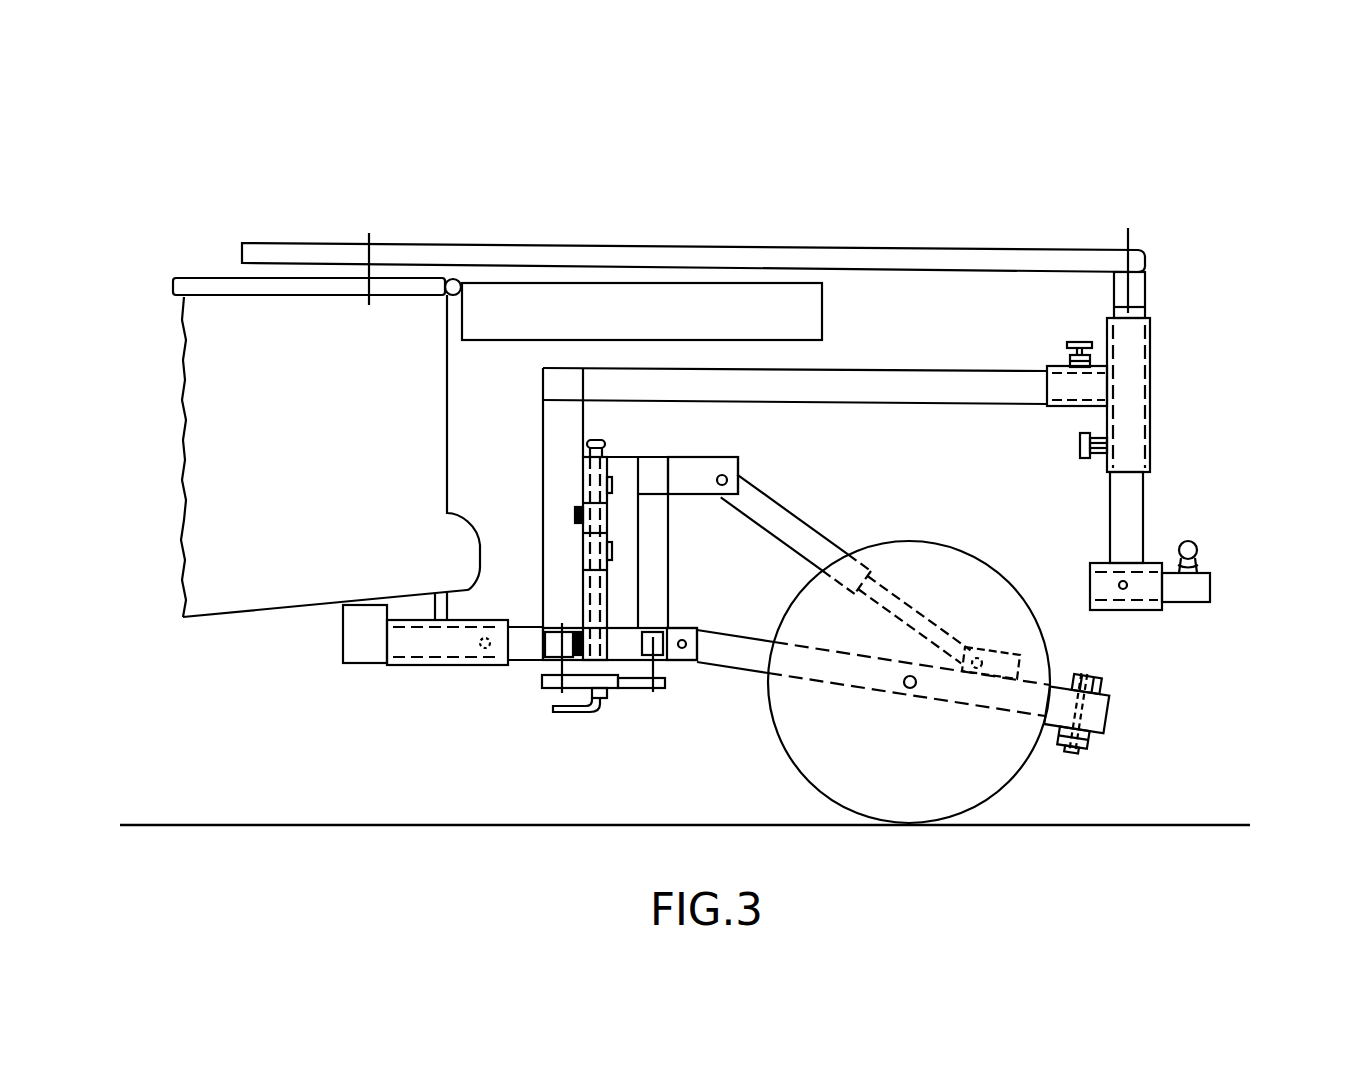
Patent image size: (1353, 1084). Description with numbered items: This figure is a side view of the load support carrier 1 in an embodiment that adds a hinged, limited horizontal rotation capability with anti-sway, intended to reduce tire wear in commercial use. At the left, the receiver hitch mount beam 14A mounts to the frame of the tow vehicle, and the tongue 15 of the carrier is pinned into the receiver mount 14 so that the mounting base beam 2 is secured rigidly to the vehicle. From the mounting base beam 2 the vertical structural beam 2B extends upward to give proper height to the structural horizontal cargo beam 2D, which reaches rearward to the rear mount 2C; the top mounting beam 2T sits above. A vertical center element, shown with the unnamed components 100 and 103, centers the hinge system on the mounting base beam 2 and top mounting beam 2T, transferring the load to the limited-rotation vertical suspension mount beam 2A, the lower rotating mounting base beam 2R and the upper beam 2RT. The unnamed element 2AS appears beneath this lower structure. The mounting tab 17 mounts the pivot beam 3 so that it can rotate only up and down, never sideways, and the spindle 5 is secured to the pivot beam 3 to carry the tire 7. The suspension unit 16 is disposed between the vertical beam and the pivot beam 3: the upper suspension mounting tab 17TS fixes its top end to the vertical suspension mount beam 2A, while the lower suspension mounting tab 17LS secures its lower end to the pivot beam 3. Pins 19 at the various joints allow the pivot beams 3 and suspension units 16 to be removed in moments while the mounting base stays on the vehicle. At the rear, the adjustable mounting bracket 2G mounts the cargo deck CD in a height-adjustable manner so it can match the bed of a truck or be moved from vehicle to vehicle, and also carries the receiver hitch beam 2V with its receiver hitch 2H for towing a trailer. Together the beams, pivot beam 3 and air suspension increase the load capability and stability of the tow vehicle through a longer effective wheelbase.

The trailer assembly 1 is at (1056, 198).
The mounting base beam 2 is at (538, 660).
The vertical suspension mount beam 2A is at (620, 473).
The frame adjustable stand 2AS is at (637, 690).
The vertical structural beam 2B is at (543, 548).
The rear mount 2C is at (1142, 307).
The structural horizontal cargo beam 2D is at (1113, 295).
The adjustable mounting bracket 2G is at (1152, 370).
The receiver hitch 2H is at (1185, 592).
The lower rotating mounting base beam 2R is at (653, 648).
The upper beam 2RT is at (658, 468).
The top mounting beam 2T is at (542, 387).
The receiver hitch beam 2V is at (1133, 510).
The pivot beam 3 is at (1055, 727).
The spindle 5 is at (916, 688).
The tire 7 is at (863, 758).
The receiver mount 14 is at (423, 668).
The receiver hitch mount beam 14A is at (367, 652).
The tongue 15 is at (518, 663).
The suspension unit 16 is at (822, 533).
The mounting tab 17 is at (687, 628).
The upper suspension mounting tab 17TS is at (717, 497).
The lower suspension mounting tab 17LS is at (1023, 654).
The pin 19 is at (369, 236).
The actuator cylinder 100 is at (580, 490).
The actuator rod end 103 is at (598, 438).
The cargo deck CD is at (938, 258).